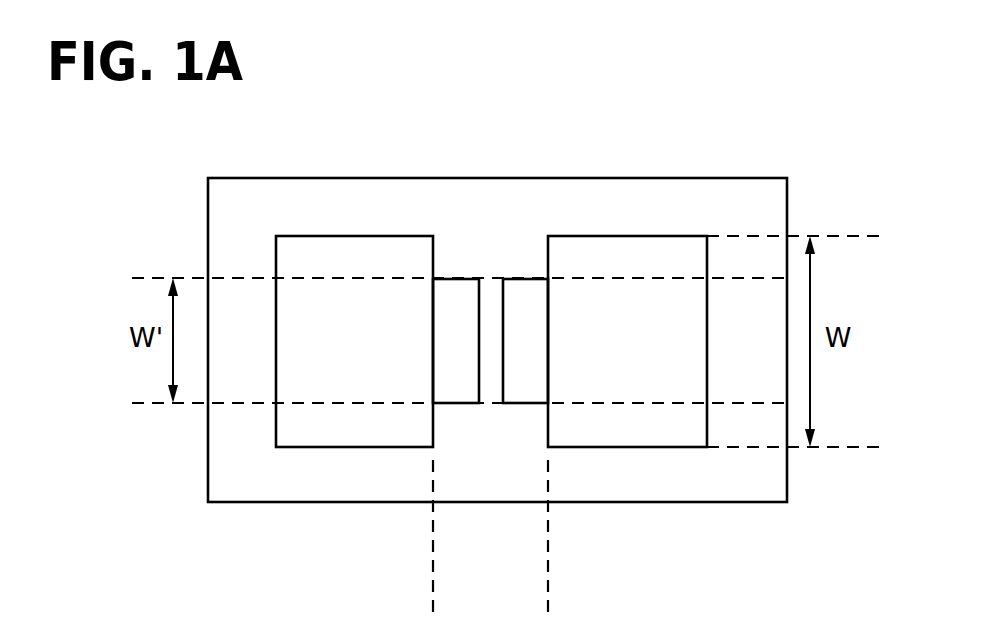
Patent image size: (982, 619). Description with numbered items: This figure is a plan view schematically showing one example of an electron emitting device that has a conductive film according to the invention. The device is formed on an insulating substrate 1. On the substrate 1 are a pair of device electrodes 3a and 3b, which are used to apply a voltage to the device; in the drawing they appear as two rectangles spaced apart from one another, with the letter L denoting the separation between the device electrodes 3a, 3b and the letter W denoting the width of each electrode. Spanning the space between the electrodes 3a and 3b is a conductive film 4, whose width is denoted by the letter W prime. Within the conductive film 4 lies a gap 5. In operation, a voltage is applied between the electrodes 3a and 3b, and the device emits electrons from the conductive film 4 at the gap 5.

The substrate 1 is at (754, 200).
The device electrode 3a is at (307, 250).
The device electrode 3b is at (598, 258).
The conductive film 4 is at (459, 293).
The gap 5 is at (488, 392).